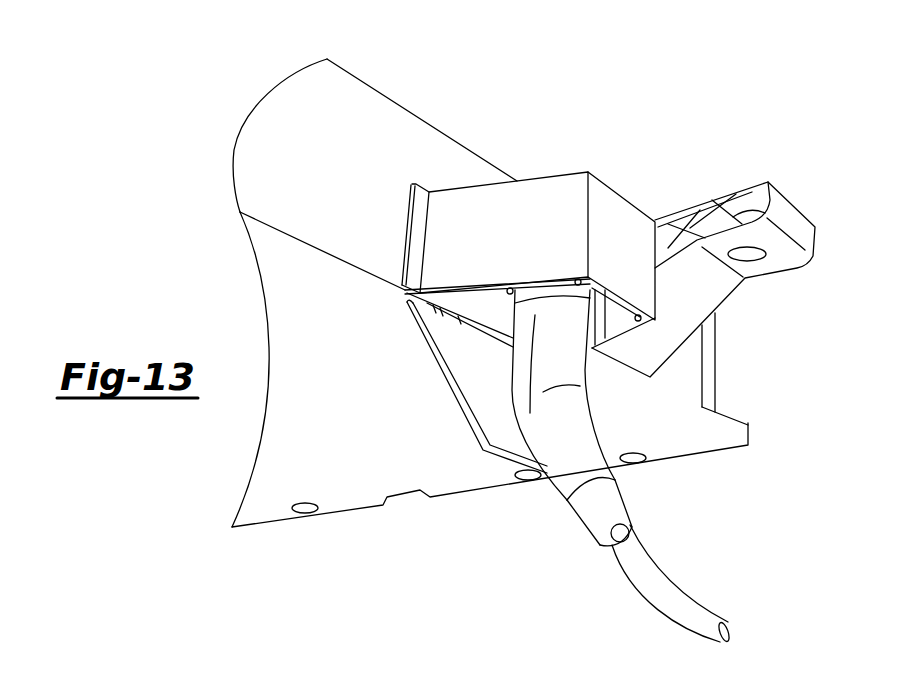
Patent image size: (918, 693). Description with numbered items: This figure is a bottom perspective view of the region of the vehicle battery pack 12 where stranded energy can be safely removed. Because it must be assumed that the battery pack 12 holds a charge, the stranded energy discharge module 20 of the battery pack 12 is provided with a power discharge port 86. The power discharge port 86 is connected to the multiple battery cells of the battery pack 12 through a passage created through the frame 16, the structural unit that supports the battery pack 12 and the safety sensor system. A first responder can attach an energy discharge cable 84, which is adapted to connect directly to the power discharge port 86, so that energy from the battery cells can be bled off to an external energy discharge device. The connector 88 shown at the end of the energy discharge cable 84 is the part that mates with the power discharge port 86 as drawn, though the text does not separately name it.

The battery pack 12 is at (205, 117).
The frame 16 is at (362, 120).
The stranded energy discharge module 20 is at (640, 178).
The energy discharge cable 84 is at (660, 592).
The power discharge port 86 is at (558, 207).
The charge connector 88 is at (568, 360).